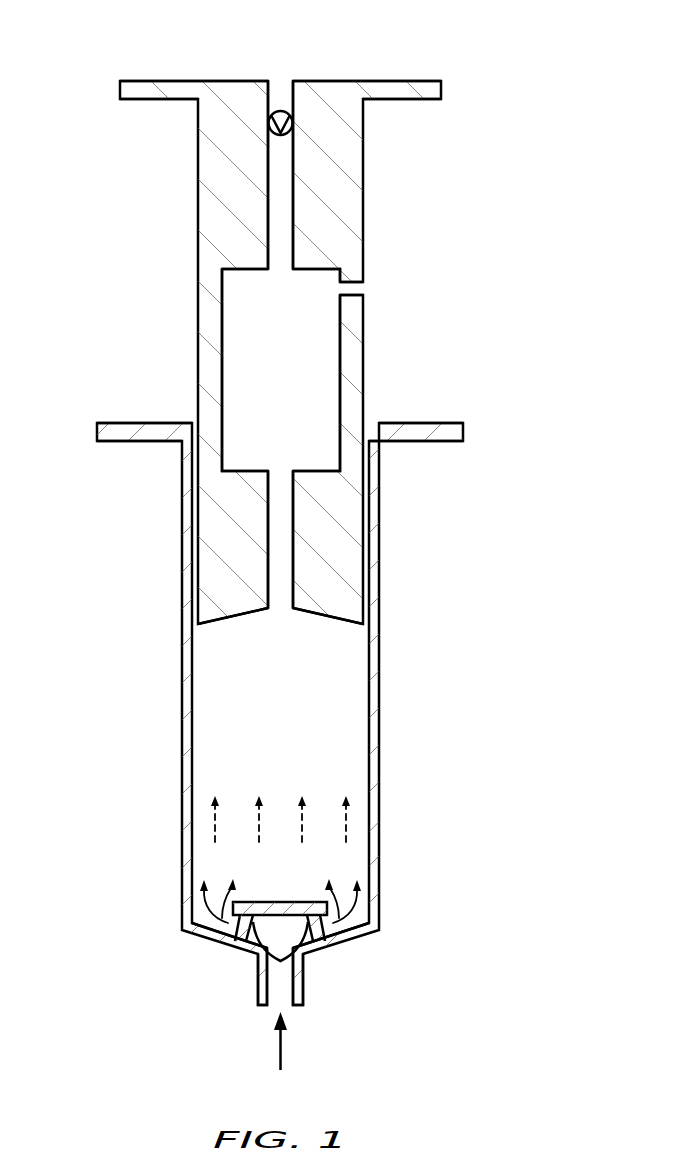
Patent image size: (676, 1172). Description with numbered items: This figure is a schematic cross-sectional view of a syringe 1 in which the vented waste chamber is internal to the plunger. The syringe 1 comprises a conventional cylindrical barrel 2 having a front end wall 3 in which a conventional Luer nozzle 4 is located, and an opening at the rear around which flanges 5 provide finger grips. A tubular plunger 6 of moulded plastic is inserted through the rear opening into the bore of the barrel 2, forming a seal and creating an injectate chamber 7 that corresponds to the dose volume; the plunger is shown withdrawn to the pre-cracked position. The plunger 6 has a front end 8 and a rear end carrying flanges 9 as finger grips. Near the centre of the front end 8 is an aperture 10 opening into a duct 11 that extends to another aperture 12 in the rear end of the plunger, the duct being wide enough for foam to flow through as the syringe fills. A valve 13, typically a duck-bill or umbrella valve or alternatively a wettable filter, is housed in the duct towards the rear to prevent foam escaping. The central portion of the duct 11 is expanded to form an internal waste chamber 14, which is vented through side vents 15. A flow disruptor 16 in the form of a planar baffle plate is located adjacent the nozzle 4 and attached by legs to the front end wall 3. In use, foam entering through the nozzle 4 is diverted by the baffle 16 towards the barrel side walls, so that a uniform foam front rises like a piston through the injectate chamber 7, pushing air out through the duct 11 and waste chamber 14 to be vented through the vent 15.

The syringe 1 is at (338, 586).
The barrel 2 is at (380, 718).
The front end wall 3 is at (345, 945).
The Luer nozzle 4 is at (257, 982).
The flanges 5 is at (463, 432).
The tubular plunger 6 is at (207, 192).
The injectate chamber 7 is at (227, 758).
The front end 8 is at (228, 620).
The flanges 9 is at (442, 90).
The aperture 10 is at (280, 608).
The duct 11 is at (283, 541).
The aperture in the rear end of the plunger 12 is at (280, 80).
The valve 13 is at (292, 121).
The internal waste chamber 14 is at (230, 317).
The side vent 15 is at (363, 284).
The flow disruptor 16 is at (278, 902).